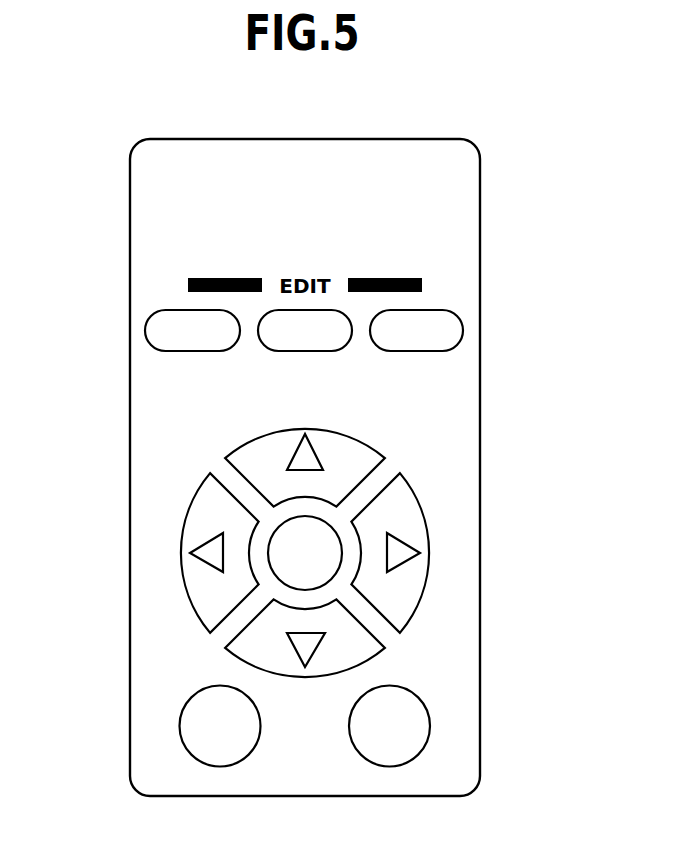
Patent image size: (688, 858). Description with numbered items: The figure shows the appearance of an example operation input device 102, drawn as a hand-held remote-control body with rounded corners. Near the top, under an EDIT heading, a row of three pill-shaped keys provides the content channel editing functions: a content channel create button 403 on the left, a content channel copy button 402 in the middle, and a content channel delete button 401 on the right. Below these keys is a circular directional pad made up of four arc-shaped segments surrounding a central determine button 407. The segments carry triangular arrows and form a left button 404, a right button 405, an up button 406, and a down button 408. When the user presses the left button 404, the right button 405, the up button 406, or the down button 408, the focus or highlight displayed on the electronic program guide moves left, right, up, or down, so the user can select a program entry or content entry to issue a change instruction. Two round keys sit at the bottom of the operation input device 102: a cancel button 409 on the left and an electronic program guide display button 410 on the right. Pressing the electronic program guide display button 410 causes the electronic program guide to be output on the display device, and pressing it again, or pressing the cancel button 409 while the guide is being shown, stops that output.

The operation input device 102 is at (371, 138).
The content channel delete button 401 is at (418, 352).
The content channel copy button 402 is at (305, 352).
The content channel create button 403 is at (192, 352).
The left button 404 is at (182, 553).
The right button 405 is at (428, 551).
The up button 406 is at (370, 441).
The determine button 407 is at (330, 567).
The down button 408 is at (247, 662).
The cancel button 409 is at (179, 727).
The electronic program guide display button 410 is at (430, 725).